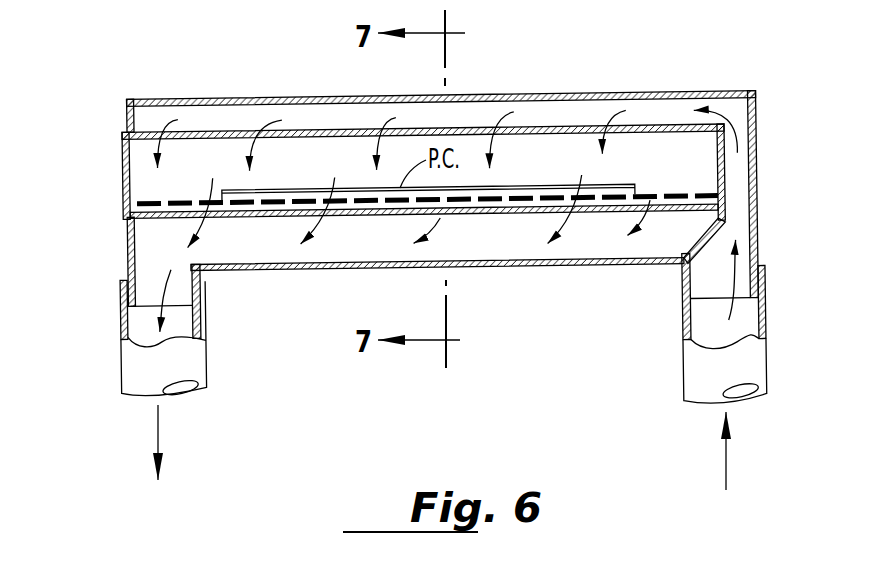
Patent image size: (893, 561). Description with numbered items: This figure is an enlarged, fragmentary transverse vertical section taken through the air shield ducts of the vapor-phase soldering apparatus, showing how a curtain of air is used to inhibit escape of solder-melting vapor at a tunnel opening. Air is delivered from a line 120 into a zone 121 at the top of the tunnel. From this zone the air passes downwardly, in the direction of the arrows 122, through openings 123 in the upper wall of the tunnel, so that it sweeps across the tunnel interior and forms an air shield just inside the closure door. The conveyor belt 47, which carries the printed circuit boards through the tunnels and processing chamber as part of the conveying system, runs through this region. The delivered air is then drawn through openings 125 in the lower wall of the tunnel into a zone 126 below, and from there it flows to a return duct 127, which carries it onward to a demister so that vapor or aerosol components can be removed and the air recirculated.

The conveyor belt 47 is at (158, 200).
The air delivery line 120 is at (765, 305).
The zone at top of tunnel 121 is at (545, 115).
The arrows 122 is at (657, 195).
The openings in upper wall of tunnel 123 is at (666, 125).
The openings in lower wall of tunnel 125 is at (504, 218).
The zone below tunnel 126 is at (657, 232).
The return duct 127 is at (205, 305).